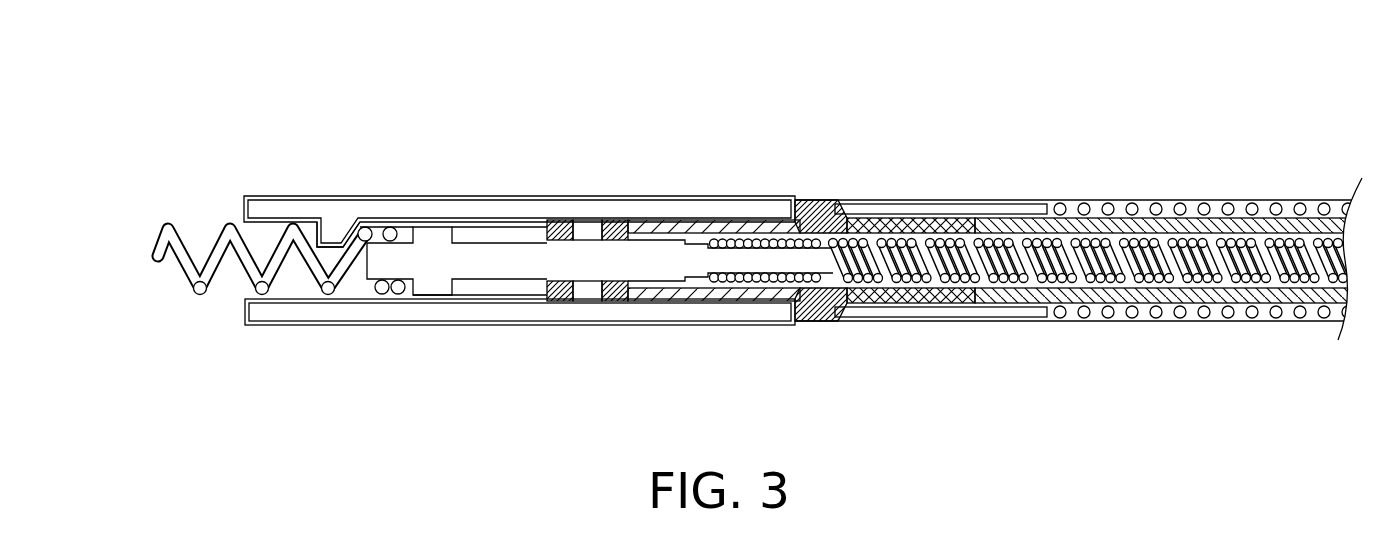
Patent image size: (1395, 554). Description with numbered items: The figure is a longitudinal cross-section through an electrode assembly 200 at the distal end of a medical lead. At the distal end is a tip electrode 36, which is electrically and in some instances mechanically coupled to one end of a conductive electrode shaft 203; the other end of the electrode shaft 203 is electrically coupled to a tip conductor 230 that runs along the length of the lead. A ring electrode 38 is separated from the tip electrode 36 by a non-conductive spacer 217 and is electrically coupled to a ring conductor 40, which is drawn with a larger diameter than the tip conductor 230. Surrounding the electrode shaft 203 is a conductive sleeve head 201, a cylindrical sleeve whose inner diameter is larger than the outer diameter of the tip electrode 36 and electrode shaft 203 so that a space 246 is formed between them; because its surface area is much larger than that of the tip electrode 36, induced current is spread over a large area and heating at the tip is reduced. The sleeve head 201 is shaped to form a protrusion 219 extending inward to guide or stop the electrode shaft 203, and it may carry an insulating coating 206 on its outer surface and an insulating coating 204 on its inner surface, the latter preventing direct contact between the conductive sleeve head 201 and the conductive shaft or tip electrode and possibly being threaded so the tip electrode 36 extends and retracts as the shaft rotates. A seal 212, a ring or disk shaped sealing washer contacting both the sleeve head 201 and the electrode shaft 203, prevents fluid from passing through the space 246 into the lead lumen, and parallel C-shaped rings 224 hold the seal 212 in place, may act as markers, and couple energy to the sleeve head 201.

The tip electrode 36 is at (183, 230).
The ring electrode 38 is at (972, 218).
The ring conductor 40 is at (1153, 200).
The electrode assembly 200 is at (766, 219).
The conductive sleeve head 201 is at (518, 214).
The conductive electrode shaft 203 is at (462, 266).
The insulating coating 204 is at (418, 222).
The insulating coating 206 is at (616, 220).
The seal 212 is at (593, 228).
The non-conductive spacer 217 is at (808, 212).
The protrusion 219 is at (337, 222).
The rings 224 is at (548, 220).
The tip conductor 230 is at (1093, 262).
The space 246 is at (490, 230).